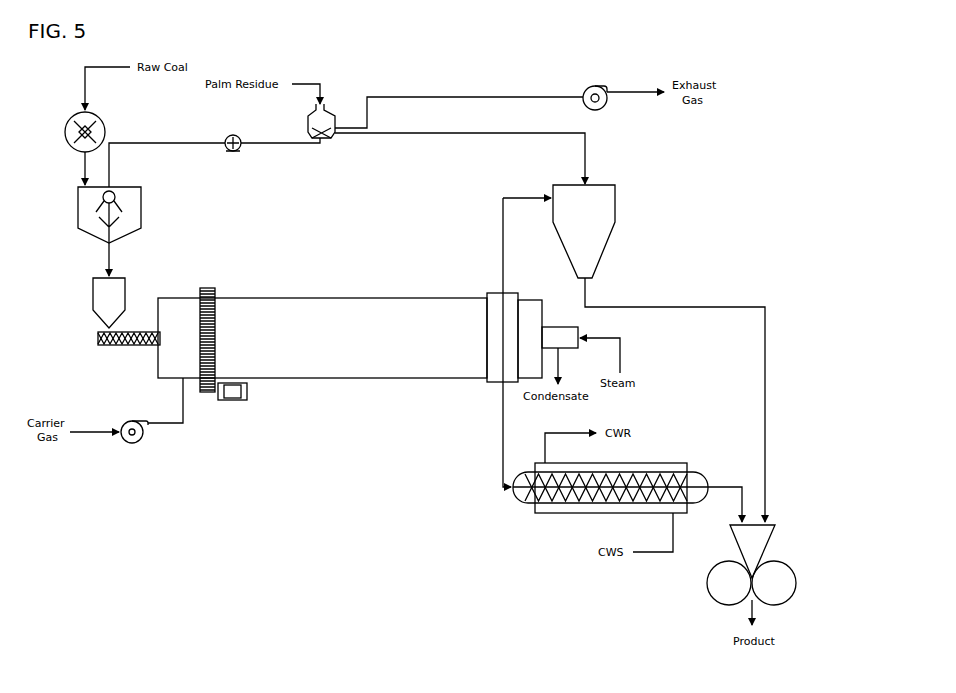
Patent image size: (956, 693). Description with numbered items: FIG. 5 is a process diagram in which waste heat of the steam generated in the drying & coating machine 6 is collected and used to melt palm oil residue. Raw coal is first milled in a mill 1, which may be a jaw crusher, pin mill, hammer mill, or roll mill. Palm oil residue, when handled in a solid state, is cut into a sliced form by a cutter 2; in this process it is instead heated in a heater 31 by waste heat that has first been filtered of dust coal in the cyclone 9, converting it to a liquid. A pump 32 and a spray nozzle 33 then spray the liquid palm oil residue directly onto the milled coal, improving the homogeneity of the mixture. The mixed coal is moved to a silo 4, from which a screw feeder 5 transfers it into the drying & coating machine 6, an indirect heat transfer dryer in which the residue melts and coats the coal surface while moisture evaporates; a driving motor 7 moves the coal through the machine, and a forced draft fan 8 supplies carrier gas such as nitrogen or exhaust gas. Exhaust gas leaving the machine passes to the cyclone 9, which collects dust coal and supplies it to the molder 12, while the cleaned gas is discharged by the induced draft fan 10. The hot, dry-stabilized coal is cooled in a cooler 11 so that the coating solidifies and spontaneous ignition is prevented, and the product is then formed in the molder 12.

The mill 1 is at (66, 128).
The cutter 2 is at (142, 217).
The spray nozzle 33 is at (118, 192).
The silo 4 is at (92, 300).
The screw feeder 5 is at (128, 345).
The drying & coating machine 6 is at (350, 298).
The driving motor 7 is at (249, 394).
The forced draft (FD) fan 8 is at (140, 443).
The cyclone 9 is at (612, 232).
The induced draft (ID) fan 10 is at (598, 111).
The cooler 11 is at (648, 463).
The molder 12 is at (775, 565).
The heater 31 is at (333, 138).
The pump 32 is at (240, 147).